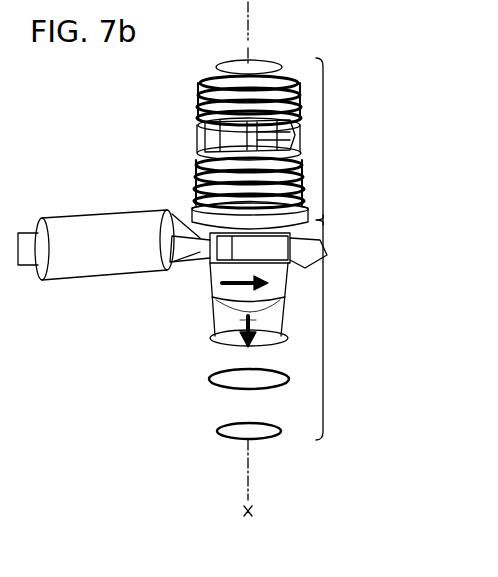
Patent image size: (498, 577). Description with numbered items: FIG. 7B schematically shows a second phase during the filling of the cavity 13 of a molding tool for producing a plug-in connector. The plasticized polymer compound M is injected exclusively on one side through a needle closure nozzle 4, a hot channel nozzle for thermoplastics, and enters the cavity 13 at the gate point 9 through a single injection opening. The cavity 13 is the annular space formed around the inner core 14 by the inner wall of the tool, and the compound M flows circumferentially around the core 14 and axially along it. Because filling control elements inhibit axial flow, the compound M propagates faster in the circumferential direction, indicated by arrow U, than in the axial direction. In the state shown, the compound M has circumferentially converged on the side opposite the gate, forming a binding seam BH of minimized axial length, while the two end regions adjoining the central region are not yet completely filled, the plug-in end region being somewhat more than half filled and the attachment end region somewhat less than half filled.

The needle closure nozzle 4 is at (86, 218).
The gate point 9 is at (190, 232).
The cavity 13 is at (296, 78).
The inner core 14 is at (262, 405).
The bayonet hook BH is at (296, 248).
The circumferential direction arrow U is at (235, 310).
The polymer compound M is at (227, 310).